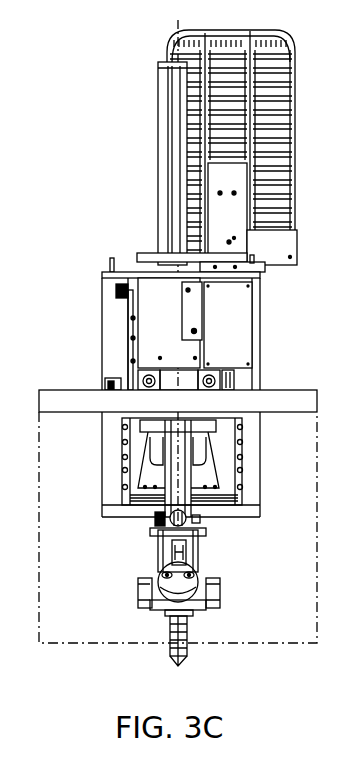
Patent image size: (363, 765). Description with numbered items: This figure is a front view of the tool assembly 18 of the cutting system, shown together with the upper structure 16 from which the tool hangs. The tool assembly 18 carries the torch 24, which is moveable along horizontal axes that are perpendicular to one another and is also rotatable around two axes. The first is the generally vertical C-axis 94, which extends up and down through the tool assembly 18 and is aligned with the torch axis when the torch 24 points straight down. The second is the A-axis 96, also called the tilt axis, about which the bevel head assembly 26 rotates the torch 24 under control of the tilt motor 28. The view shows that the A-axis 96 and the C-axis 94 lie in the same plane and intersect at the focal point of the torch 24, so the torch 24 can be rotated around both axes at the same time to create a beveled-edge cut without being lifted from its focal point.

The tool changer / drive housing assembly 16 is at (180, 273).
The tool assembly 18 is at (285, 578).
The torch 24 is at (190, 642).
The bevel head assembly 26 is at (158, 562).
The tilt motor 28 is at (192, 520).
The C-axis 94 is at (183, 472).
The A-axis 96 is at (229, 468).